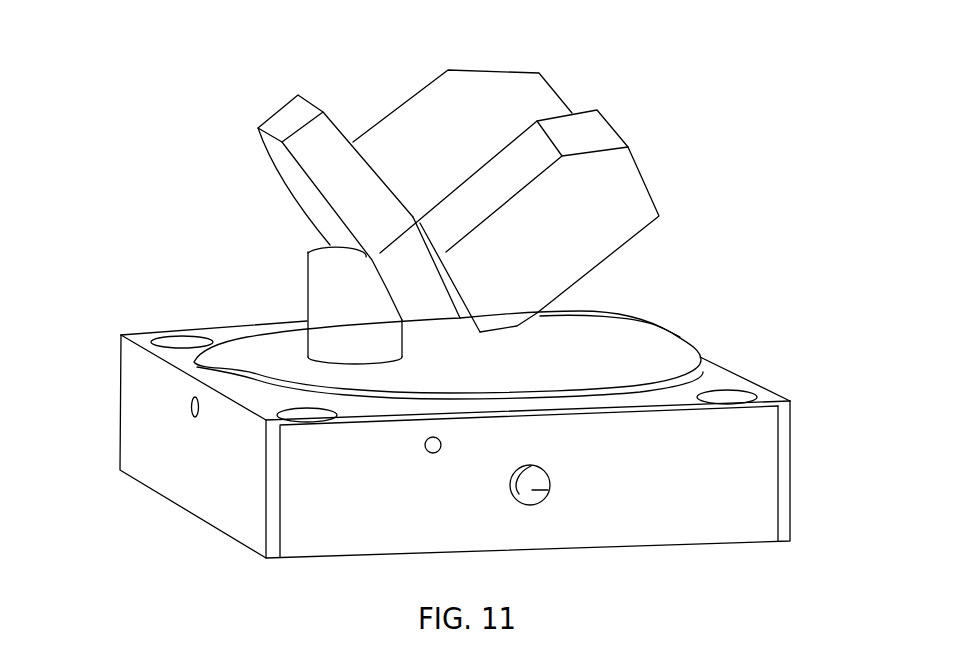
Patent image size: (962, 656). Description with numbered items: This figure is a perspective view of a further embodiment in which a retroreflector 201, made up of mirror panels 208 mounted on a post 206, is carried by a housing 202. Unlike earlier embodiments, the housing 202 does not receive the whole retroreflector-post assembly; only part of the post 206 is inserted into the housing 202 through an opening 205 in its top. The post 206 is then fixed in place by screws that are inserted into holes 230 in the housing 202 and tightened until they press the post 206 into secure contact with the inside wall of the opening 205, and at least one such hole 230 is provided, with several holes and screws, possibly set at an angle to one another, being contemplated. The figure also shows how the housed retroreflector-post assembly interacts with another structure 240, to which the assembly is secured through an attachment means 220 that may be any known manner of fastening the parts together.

The retroreflector 201 is at (607, 113).
The housing 202 is at (637, 342).
The opening 205 is at (307, 352).
The post 206 is at (342, 275).
The mirror panels 208 is at (498, 88).
The attachment means 220 is at (547, 490).
The holes 230 is at (193, 403).
The another structure 240 is at (750, 467).